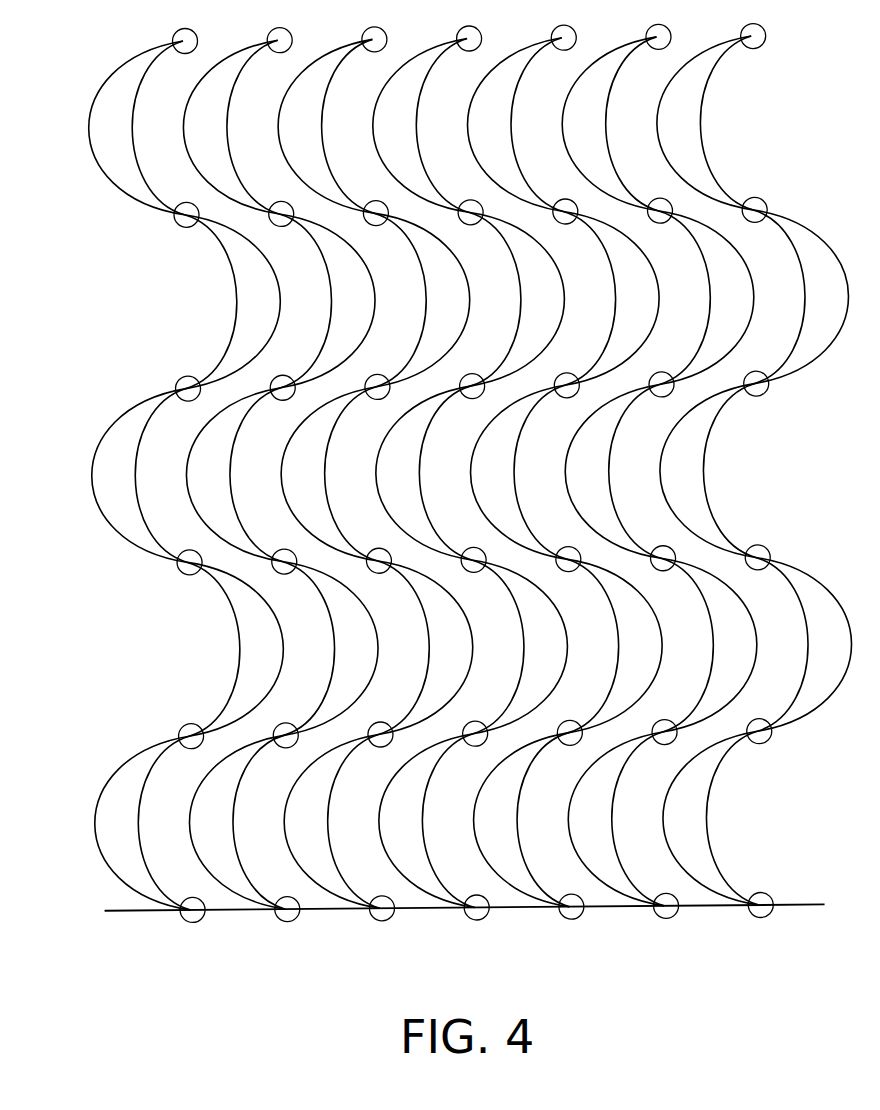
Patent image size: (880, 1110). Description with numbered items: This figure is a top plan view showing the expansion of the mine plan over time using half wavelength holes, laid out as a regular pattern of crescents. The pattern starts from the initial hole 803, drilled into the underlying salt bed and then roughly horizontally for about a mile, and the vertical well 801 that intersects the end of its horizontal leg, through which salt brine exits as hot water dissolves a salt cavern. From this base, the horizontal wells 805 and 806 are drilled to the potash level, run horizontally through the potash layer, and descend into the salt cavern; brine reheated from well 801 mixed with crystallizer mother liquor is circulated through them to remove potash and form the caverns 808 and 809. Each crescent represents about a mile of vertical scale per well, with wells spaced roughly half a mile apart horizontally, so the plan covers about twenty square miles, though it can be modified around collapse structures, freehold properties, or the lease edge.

The vertical well 801 is at (182, 924).
The initial hole 803 is at (282, 924).
The horizontal well 805 is at (172, 726).
The horizontal well 806 is at (266, 743).
The cavern 808 is at (116, 835).
The cavern 809 is at (212, 829).